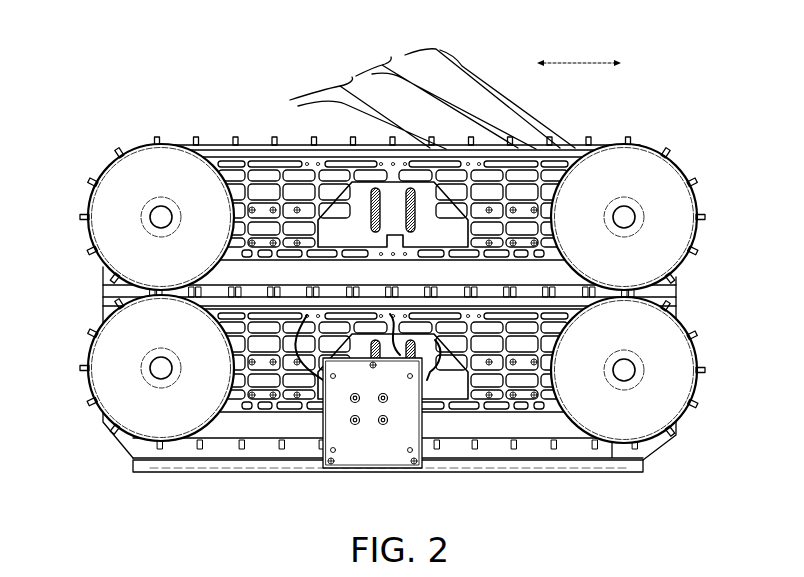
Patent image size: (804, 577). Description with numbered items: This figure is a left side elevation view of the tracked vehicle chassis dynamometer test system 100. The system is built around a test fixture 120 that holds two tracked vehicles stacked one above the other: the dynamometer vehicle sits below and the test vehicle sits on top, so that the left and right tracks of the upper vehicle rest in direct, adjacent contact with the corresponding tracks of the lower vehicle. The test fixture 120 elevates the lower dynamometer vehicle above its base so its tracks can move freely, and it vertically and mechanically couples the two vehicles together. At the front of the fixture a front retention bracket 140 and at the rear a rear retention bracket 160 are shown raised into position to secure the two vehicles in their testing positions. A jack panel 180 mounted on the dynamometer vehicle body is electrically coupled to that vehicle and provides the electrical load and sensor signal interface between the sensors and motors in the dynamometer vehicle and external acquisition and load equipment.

The tracked vehicle chassis dynamometer test system 100 is at (127, 62).
The test fixture 120 is at (442, 473).
The front retention bracket 140 is at (108, 291).
The rear retention bracket 160 is at (658, 295).
The jack panel 180 is at (355, 452).